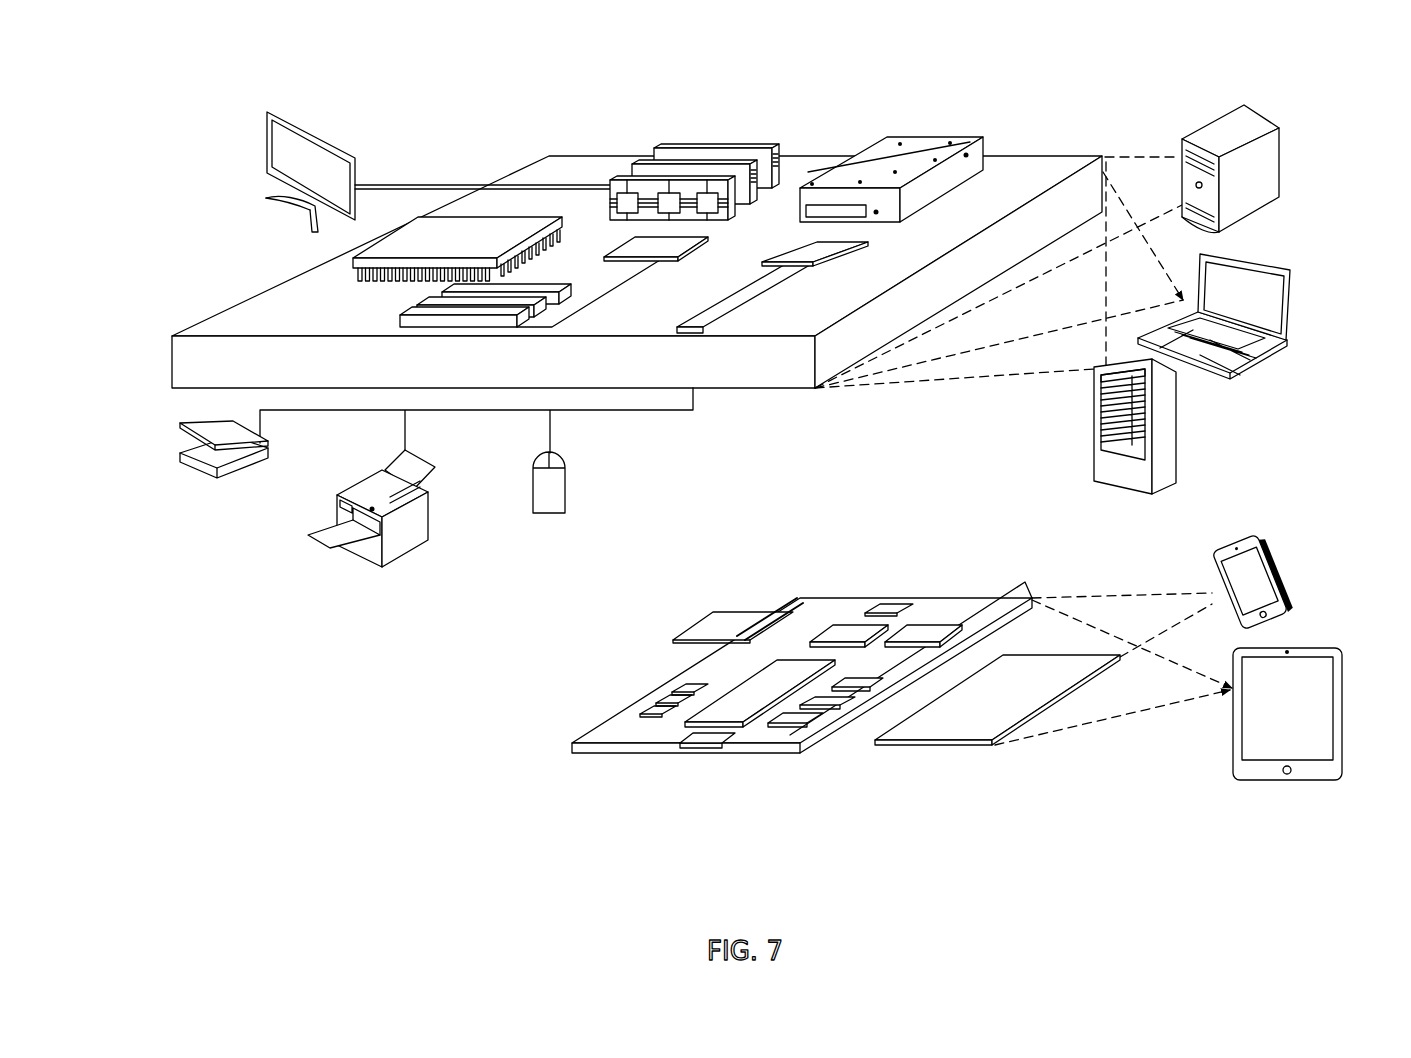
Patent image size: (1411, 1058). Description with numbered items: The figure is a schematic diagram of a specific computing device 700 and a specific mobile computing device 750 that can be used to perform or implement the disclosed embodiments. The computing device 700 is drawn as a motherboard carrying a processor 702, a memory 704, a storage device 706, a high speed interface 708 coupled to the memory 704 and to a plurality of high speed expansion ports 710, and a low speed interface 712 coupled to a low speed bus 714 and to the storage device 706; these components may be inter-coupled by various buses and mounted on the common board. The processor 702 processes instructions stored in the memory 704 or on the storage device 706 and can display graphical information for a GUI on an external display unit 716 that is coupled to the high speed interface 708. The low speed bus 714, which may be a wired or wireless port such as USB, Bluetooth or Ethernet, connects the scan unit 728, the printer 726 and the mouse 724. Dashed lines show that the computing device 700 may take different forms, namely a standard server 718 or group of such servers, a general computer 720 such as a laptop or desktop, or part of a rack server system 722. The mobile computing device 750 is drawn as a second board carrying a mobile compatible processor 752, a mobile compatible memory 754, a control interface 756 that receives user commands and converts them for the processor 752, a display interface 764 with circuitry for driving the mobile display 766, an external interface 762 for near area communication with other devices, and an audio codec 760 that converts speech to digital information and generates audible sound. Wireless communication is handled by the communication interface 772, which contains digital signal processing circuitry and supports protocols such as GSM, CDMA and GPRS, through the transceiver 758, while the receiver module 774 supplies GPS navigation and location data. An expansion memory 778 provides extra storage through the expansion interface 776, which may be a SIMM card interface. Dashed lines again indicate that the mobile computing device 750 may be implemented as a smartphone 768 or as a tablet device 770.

The specific computing device 700 is at (486, 156).
The processor 702 is at (355, 266).
The memory 704 is at (682, 149).
The storage device 706 is at (880, 147).
The high speed interface 708 is at (638, 245).
The high speed expansion ports 710 is at (420, 308).
The low speed interface 712 is at (837, 258).
The low speed bus 714 is at (708, 338).
The display unit 716 is at (268, 111).
The standard server 718 is at (1256, 122).
The general computer 720 is at (1268, 258).
The rack server system 722 is at (1094, 450).
The mouse 724 is at (548, 513).
The printer 726 is at (375, 567).
The scan unit 728 is at (180, 450).
The specific mobile computing device 750 is at (568, 742).
The mobile compatible processor 752 is at (740, 730).
The mobile compatible memory 754 is at (652, 707).
The control interface 756 is at (838, 712).
The transceiver 758 is at (945, 628).
The audio codec 760 is at (860, 690).
The external interface 762 is at (700, 750).
The display interface 764 is at (805, 730).
The mobile display 766 is at (1000, 750).
The smartphone 768 is at (1243, 540).
The tablet device 770 is at (1282, 782).
The communication interface 772 is at (847, 628).
The receiver module 774 is at (885, 598).
The expansion interface 776 is at (792, 610).
The expansion memory 778 is at (675, 628).